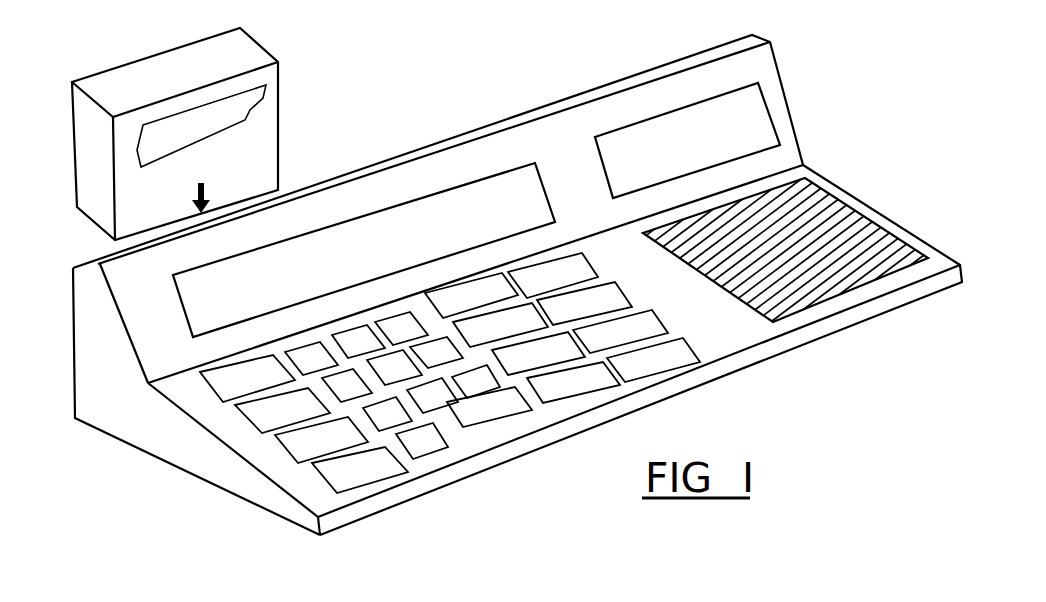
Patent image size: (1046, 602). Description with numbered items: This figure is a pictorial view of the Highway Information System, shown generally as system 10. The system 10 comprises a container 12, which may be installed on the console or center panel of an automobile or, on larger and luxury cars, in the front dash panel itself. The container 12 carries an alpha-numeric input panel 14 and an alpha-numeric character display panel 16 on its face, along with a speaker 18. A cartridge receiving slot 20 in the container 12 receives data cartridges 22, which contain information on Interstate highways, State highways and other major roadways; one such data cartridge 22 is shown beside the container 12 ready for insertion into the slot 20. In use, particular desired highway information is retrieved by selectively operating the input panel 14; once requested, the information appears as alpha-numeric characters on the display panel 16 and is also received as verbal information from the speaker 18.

The system 10 is at (529, 462).
The container 12 is at (162, 437).
The alpha-numeric input panel 14 is at (668, 333).
The alpha-numeric character display panel 16 is at (360, 226).
The speaker 18 is at (850, 240).
The cartridge receiving slot 20 is at (762, 135).
The data cartridge 22 is at (272, 110).